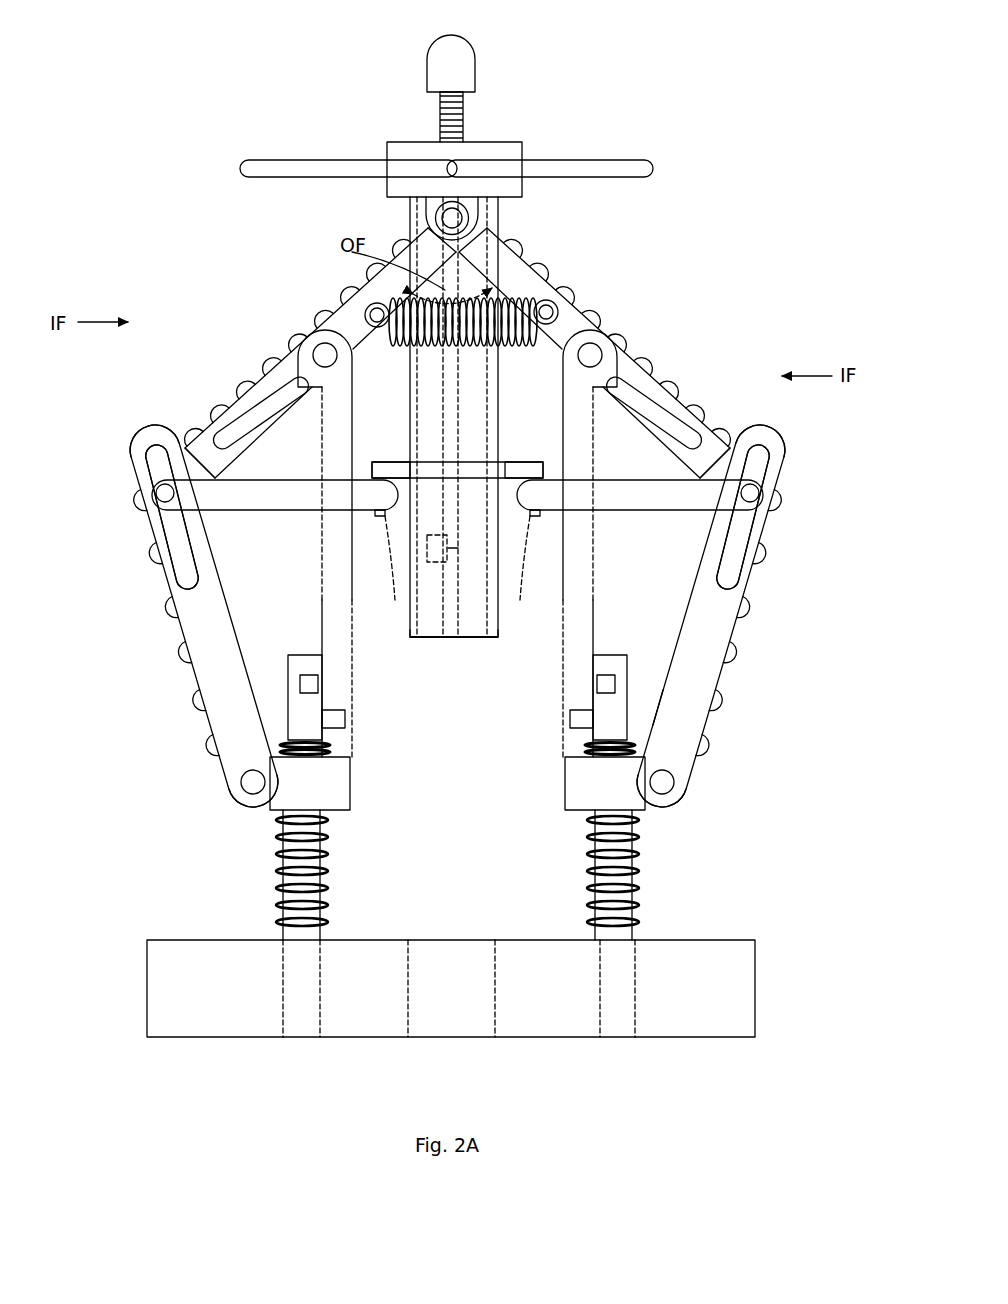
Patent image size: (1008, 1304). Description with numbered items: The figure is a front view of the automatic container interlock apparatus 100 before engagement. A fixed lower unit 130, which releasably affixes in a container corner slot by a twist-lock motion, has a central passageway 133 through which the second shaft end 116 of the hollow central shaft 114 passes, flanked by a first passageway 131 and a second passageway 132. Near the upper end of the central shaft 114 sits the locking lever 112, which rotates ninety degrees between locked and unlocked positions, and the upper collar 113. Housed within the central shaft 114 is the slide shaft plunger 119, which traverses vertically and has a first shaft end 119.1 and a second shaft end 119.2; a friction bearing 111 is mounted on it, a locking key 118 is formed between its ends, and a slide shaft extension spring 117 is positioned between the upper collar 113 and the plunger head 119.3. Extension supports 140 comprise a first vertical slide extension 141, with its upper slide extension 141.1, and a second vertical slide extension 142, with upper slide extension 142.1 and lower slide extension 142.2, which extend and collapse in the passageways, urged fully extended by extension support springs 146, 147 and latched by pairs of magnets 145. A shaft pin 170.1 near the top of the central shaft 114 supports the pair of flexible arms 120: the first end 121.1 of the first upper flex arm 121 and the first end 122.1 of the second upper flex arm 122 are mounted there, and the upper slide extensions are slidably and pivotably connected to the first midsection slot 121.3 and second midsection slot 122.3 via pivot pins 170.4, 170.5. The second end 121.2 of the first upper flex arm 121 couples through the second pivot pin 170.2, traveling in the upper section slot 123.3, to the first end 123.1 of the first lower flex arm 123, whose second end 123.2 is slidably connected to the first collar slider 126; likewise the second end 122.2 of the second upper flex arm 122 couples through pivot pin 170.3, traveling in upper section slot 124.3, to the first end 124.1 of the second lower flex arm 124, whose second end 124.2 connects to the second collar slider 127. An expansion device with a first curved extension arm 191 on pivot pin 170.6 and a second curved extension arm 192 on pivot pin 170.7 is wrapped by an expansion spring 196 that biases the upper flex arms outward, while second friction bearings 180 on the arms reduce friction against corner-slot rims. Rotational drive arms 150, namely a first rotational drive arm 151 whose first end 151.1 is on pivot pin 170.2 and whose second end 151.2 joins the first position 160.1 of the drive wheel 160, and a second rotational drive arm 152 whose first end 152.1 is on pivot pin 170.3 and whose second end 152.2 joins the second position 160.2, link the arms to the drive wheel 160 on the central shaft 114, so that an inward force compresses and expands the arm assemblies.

The automatic container interlock apparatus 100 is at (220, 103).
The friction bearing 111 is at (428, 50).
The locking lever 112 is at (600, 162).
The upper collar 113 is at (410, 158).
The central shaft 114 is at (490, 634).
The second shaft end 116 is at (454, 633).
The slide shaft extension spring 117 is at (466, 112).
The locking key 118 is at (432, 600).
The slide shaft plunger 119 is at (460, 405).
The first shaft end 119.1 is at (440, 96).
The second shaft end 119.2 is at (452, 560).
The plunger head 119.3 is at (492, 52).
The pair of flexible arms 120 is at (464, 539).
The first upper flex arm 121 is at (267, 336).
The first end 121.1 is at (425, 237).
The second end 121.2 is at (193, 455).
The first midsection slot 121.3 is at (245, 420).
The second upper flex arm 122 is at (629, 348).
The first end 122.1 is at (497, 232).
The second end 122.2 is at (735, 425).
The second midsection slot 122.3 is at (650, 400).
The first lower flex arm 123 is at (152, 615).
The first end 123.1 is at (147, 446).
The second end 123.2 is at (262, 802).
The upper section slot 123.3 is at (186, 582).
The second lower flex arm 124 is at (769, 642).
The first end 124.1 is at (770, 462).
The second end 124.2 is at (655, 805).
The upper section slot 124.3 is at (742, 550).
The first collar slider 126 is at (325, 786).
The second collar slider 127 is at (590, 786).
The lower unit 130 is at (465, 983).
The first passageway 131 is at (292, 1020).
The second passageway 132 is at (602, 1000).
The central passageway 133 is at (445, 1008).
The extension supports 140 is at (544, 635).
The first vertical slide extension 141 is at (372, 635).
The upper slide extension 141.1 is at (323, 630).
The second vertical slide extension 142 is at (663, 635).
The upper slide extension 142.1 is at (583, 645).
The lower slide extension 142.2 is at (700, 700).
The magnets 145 is at (312, 684).
The extension support spring 146 is at (323, 872).
The extension support spring 147 is at (585, 870).
The rotational drive arms 150 is at (457, 527).
The first rotational drive arm 151 is at (258, 500).
The first end 151.1 is at (183, 560).
The second end 151.2 is at (390, 600).
The second rotational drive arm 152 is at (655, 497).
The first end 152.1 is at (750, 445).
The second end 152.2 is at (528, 516).
The drive wheel 160 is at (463, 451).
The first position 160.1 is at (380, 466).
The second position 160.2 is at (540, 470).
The shaft pin 170.1 is at (455, 220).
The second pivot pin 170.2 is at (158, 491).
The pivot pin 170.3 is at (758, 493).
The pivot pin 170.4 is at (321, 352).
The pivot pin 170.5 is at (593, 350).
The pivot pin 170.6 is at (375, 313).
The pivot pin 170.7 is at (550, 310).
The second friction bearings 180 is at (235, 402).
The first curved extension arm 191 is at (400, 300).
The second curved extension arm 192 is at (546, 325).
The expansion spring 196 is at (378, 328).